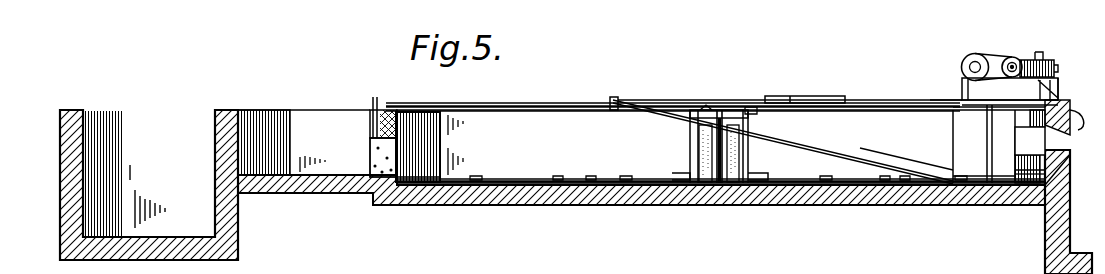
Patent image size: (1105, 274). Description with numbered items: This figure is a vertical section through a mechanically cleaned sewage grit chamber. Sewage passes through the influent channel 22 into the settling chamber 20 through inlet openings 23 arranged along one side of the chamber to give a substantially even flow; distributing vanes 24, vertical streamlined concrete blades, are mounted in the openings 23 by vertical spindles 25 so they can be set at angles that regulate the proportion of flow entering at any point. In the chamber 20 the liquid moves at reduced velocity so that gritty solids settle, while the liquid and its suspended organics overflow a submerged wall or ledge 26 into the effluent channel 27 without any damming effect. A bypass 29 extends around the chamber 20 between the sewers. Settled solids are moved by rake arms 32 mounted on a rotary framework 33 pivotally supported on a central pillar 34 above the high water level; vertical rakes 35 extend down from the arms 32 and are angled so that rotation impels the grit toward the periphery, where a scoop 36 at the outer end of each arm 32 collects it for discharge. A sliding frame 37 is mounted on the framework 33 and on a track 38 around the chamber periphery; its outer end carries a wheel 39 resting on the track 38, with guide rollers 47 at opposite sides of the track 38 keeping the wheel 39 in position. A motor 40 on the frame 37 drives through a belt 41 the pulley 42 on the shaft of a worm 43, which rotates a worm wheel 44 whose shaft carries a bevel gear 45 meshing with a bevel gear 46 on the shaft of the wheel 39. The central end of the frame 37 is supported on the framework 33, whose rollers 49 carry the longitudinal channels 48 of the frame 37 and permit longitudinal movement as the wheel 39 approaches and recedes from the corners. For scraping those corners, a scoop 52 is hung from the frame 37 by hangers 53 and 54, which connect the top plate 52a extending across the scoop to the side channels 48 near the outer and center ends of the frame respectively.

The settling chamber 20 is at (720, 146).
The influent channel 22 is at (641, 157).
The inlet openings 23 is at (369, 143).
The distributing vanes 24 is at (403, 152).
The vertical spindles 25 is at (376, 97).
The submerged wall or ledge 26 is at (1060, 168).
The effluent channel 27 is at (1070, 187).
The bypass 29 is at (132, 180).
The rake arms 32 is at (511, 178).
The rotary framework 33 is at (688, 143).
The pillar 34 is at (745, 160).
The vertical scraping blades or rakes 35 is at (591, 177).
The scoop 36 is at (414, 180).
The sliding frame 37 is at (746, 96).
The track 38 is at (506, 103).
The wheel 39 is at (1052, 88).
The motor 40 is at (961, 69).
The belt 41 is at (994, 57).
The pulley 42 is at (1008, 57).
The worm 43 is at (1013, 62).
The worm wheel 44 is at (1046, 60).
The bevel gear 45 is at (994, 91).
The bevel gear 46 is at (1030, 112).
The guide rollers 47 is at (1044, 150).
The longitudinal channels 48 is at (884, 100).
The rollers 49 is at (757, 113).
The scoop 52 is at (972, 178).
The top plate 52a is at (1020, 168).
The hanger 53 is at (987, 130).
The hanger 54 is at (857, 152).